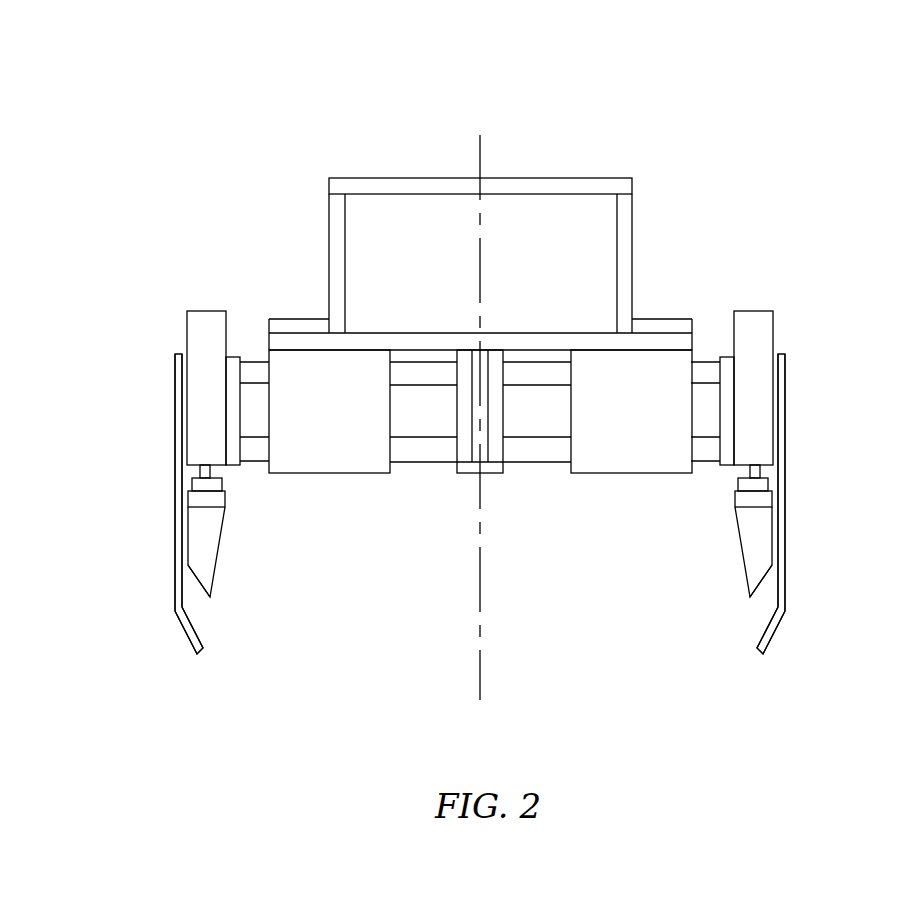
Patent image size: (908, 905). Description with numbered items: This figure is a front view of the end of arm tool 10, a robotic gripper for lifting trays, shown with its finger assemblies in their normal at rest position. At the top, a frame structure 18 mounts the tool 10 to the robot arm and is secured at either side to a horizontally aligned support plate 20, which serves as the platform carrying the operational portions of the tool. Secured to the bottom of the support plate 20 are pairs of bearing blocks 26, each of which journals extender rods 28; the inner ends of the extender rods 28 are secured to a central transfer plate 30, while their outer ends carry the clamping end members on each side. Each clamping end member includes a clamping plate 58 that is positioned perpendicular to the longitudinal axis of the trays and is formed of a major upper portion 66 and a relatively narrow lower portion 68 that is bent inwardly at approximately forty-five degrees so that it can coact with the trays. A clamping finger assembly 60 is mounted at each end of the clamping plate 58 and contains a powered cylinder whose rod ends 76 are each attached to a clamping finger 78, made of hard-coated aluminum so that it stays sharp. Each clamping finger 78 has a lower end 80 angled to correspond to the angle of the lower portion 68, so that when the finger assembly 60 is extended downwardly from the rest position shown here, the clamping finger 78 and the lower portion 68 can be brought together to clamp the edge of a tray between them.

The tool 10 is at (410, 125).
The frame structure 18 is at (632, 237).
The support plate 20 is at (521, 333).
The bearing blocks 26 is at (345, 475).
The extender rods 28 is at (255, 437).
The transfer plate 30 is at (472, 458).
The clamping plate 58 is at (168, 445).
The clamping finger assembly 60 is at (207, 310).
The major upper portion 66 is at (172, 556).
The lower portion 68 is at (188, 632).
The rod ends 76 is at (213, 472).
The clamping finger 78 is at (212, 527).
The lower end 80 is at (200, 590).